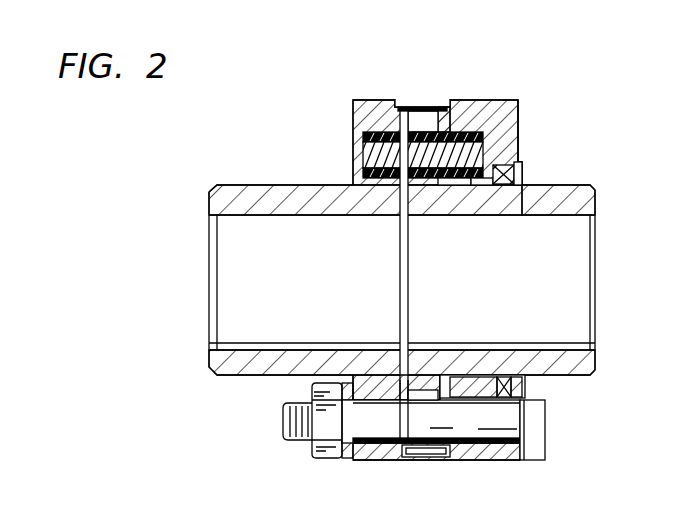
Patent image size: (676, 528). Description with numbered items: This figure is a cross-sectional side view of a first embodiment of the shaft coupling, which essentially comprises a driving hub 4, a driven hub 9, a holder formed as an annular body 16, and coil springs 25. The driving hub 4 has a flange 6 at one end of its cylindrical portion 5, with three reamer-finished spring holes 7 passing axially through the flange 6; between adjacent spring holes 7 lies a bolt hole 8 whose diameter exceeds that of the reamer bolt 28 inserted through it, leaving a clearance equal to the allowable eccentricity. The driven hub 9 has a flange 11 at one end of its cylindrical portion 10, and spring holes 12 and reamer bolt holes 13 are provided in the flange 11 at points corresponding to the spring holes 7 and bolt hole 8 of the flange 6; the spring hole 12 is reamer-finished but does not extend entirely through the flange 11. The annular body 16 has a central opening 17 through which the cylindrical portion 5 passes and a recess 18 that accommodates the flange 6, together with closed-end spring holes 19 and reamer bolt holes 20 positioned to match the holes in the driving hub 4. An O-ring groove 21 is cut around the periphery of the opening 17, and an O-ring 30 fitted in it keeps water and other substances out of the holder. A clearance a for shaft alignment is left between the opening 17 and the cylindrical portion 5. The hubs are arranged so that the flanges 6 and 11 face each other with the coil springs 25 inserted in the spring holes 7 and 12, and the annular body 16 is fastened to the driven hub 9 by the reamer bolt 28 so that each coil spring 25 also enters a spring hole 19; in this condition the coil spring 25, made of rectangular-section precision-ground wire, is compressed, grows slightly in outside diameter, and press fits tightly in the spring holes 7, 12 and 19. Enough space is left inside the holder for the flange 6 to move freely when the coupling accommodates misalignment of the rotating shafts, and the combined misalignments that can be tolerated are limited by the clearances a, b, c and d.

The driving hub 4 is at (538, 175).
The cylindrical portion 5 is at (578, 190).
The flange 6 is at (425, 125).
The spring holes 7 is at (450, 112).
The bolt hole 8 is at (418, 393).
The driven hub 9 is at (407, 253).
The cylindrical portion 10 is at (307, 197).
The flange 11 is at (376, 112).
The spring holes 12 is at (360, 140).
The reamer bolt holes 13 is at (372, 460).
The annular body 16 is at (482, 95).
The central opening 17 is at (483, 183).
The recess 18 is at (402, 107).
The closed-end spring holes 19 is at (473, 185).
The reamer bolt holes 20 is at (498, 455).
The O-ring groove 21 is at (520, 172).
The coil springs 25 is at (362, 168).
The reamer bolt 28 is at (423, 440).
The O-ring 30 is at (519, 163).
The clearance a is at (482, 372).
The clearance b is at (437, 105).
The clearance c is at (472, 430).
The clearance d is at (407, 400).